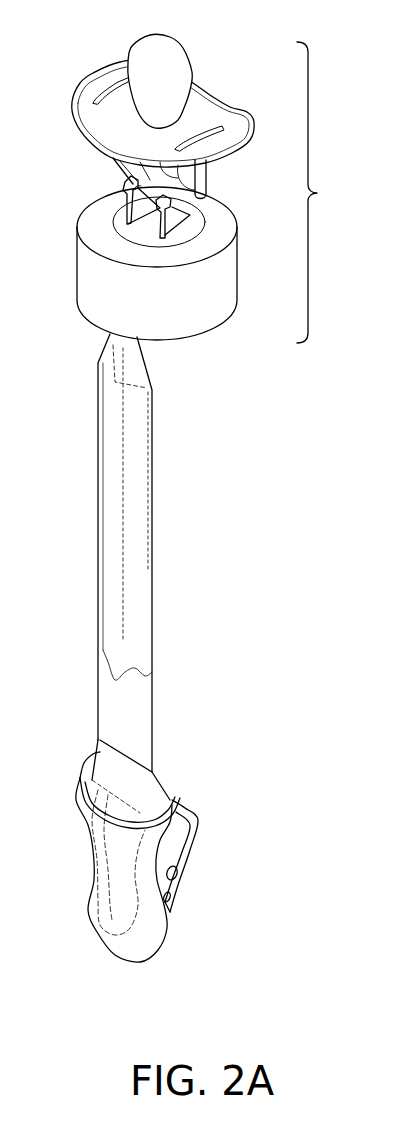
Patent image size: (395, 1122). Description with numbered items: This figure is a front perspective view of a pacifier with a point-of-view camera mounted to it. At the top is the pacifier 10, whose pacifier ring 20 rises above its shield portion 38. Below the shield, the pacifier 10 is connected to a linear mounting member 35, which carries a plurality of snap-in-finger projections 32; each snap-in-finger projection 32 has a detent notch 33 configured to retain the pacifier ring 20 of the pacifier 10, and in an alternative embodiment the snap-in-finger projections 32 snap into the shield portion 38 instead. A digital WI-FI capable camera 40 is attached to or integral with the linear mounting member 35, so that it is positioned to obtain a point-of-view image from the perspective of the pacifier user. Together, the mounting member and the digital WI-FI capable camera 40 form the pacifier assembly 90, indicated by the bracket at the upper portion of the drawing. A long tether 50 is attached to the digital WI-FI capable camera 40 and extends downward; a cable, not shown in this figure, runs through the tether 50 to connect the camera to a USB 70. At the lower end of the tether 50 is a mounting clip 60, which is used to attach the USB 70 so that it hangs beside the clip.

The pacifier 10 is at (140, 52).
The pacifier ring 20 is at (207, 173).
The snap-in-finger projections 32 is at (130, 190).
The detent notch 33 is at (190, 215).
The linear mounting member 35 is at (185, 232).
The shield portion 38 is at (246, 143).
The digital WI-FI capable camera 40 is at (90, 271).
The tether 50 is at (140, 510).
The mounting clip 60 is at (100, 870).
The USB 70 is at (182, 860).
The pacifier assembly 90 is at (325, 192).